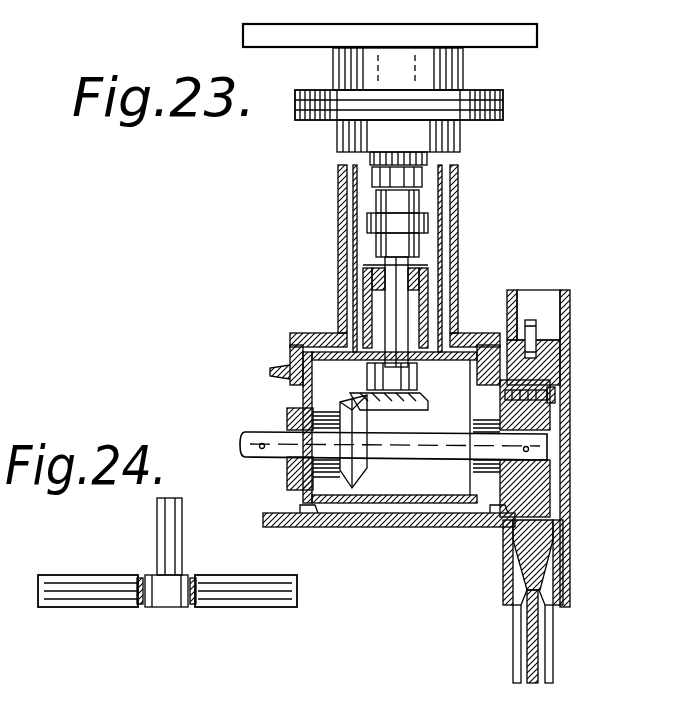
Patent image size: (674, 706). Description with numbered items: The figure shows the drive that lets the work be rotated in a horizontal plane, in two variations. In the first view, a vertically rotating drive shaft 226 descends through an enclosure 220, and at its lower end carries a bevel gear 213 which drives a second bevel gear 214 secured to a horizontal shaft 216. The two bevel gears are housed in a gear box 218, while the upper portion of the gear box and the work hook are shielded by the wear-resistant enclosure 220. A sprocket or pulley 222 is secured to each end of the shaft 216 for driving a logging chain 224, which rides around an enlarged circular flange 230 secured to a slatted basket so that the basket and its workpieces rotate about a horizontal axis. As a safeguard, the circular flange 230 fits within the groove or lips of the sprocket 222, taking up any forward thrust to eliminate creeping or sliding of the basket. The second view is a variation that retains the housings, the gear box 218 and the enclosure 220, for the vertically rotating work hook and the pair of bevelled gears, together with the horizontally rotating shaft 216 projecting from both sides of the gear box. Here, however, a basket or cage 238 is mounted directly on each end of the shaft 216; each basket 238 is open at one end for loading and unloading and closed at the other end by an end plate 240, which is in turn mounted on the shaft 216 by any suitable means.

In FIG. 23, the enclosure 220 is at (458, 183).
In FIG. 24, the enclosure 220 is at (170, 526).
In FIG. 23, the drive shaft 226 is at (410, 267).
In FIG. 23, the logging chain 224 is at (533, 325).
In FIG. 23, the sprocket 222 is at (560, 352).
In FIG. 23, the bevel gear 213 is at (416, 406).
In FIG. 23, the shaft 216 is at (441, 446).
In FIG. 24, the shaft 216 is at (147, 575).
In FIG. 23, the bevel gear 214 is at (362, 470).
In FIG. 23, the gear box 218 is at (392, 528).
In FIG. 23, the circular flange 230 is at (540, 643).
In FIG. 24, the basket 238 is at (85, 600).
In FIG. 24, the end plate 240 is at (140, 604).